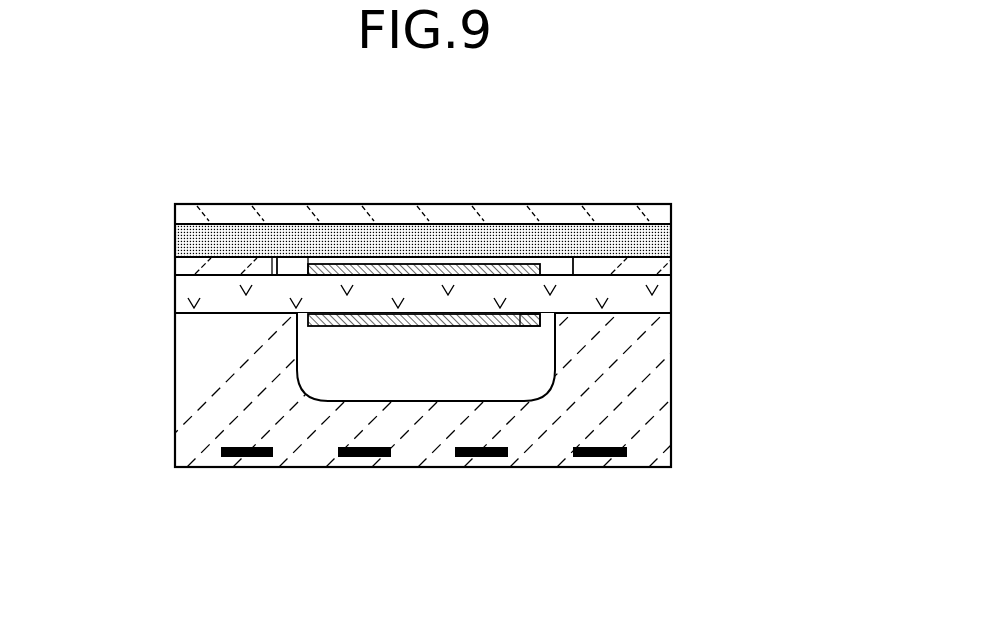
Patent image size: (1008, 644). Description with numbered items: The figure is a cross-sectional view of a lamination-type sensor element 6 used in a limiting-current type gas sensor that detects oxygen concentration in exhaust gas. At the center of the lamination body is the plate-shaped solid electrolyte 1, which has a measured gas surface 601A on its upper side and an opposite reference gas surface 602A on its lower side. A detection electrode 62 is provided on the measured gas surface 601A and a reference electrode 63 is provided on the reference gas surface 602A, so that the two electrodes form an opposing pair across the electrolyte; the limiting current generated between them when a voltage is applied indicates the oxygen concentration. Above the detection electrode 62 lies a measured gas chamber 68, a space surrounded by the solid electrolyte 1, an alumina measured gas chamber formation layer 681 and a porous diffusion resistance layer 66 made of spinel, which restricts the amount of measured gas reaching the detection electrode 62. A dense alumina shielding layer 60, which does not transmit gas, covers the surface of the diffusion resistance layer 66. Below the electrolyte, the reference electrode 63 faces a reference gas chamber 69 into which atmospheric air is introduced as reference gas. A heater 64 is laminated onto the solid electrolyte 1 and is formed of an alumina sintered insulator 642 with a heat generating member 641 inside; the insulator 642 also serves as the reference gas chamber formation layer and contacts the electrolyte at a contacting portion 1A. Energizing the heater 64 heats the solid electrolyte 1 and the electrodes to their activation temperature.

The sensor element 6 is at (653, 178).
The shielding layer 60 is at (447, 212).
The diffusion resistance layer 66 is at (228, 238).
The measured gas chamber formation layer 681 is at (213, 267).
The measured gas chamber 68 is at (560, 267).
The detection electrode 62 is at (495, 266).
The measured gas surface 601A is at (293, 274).
The solid electrolyte 1 is at (652, 304).
The contacting portion 1A is at (642, 275).
The heater 64 is at (630, 412).
The reference gas chamber 69 is at (332, 378).
The reference electrode 63 is at (417, 327).
The reference gas surface 602A is at (548, 316).
The heat generating member 641 is at (366, 452).
The insulator 642 is at (278, 398).